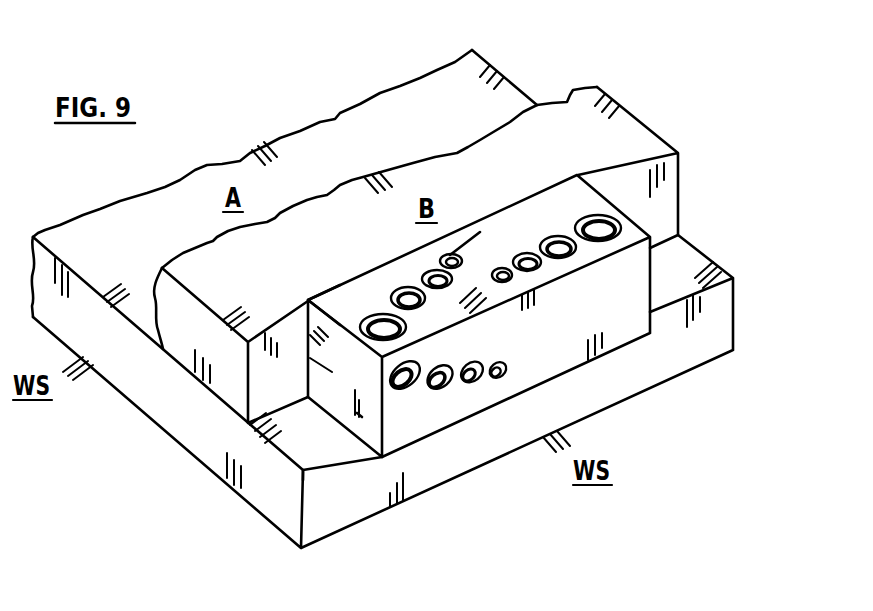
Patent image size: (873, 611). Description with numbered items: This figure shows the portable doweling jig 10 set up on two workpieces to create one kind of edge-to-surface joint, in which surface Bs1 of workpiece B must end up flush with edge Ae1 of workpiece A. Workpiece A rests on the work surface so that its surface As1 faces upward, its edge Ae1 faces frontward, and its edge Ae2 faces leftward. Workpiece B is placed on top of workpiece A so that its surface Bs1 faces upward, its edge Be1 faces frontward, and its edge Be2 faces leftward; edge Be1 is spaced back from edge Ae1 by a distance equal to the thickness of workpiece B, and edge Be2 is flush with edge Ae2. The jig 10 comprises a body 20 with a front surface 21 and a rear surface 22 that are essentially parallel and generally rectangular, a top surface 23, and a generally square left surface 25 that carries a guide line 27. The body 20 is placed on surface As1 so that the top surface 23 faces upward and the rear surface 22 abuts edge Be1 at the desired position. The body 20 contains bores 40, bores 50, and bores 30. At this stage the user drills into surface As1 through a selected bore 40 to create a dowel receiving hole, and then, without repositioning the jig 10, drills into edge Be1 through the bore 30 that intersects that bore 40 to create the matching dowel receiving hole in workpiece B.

The portable doweling jig 10 is at (761, 492).
The body 20 is at (663, 472).
The front surface 21 is at (620, 320).
The rear surface 22 is at (306, 307).
The top surface 23 is at (470, 240).
The left surface 25 is at (338, 385).
The guide line 27 is at (358, 413).
The bores 30 is at (494, 384).
The bores 40 is at (447, 258).
The bores 50 is at (578, 226).
The surface of workpiece A As1 is at (370, 130).
The surface of workpiece B Bs1 is at (572, 113).
The edge of workpiece B Be1 is at (661, 201).
The edge of workpiece B Be2 is at (177, 333).
The edge of workpiece A Ae1 is at (665, 358).
The edge of workpiece A Ae2 is at (208, 433).